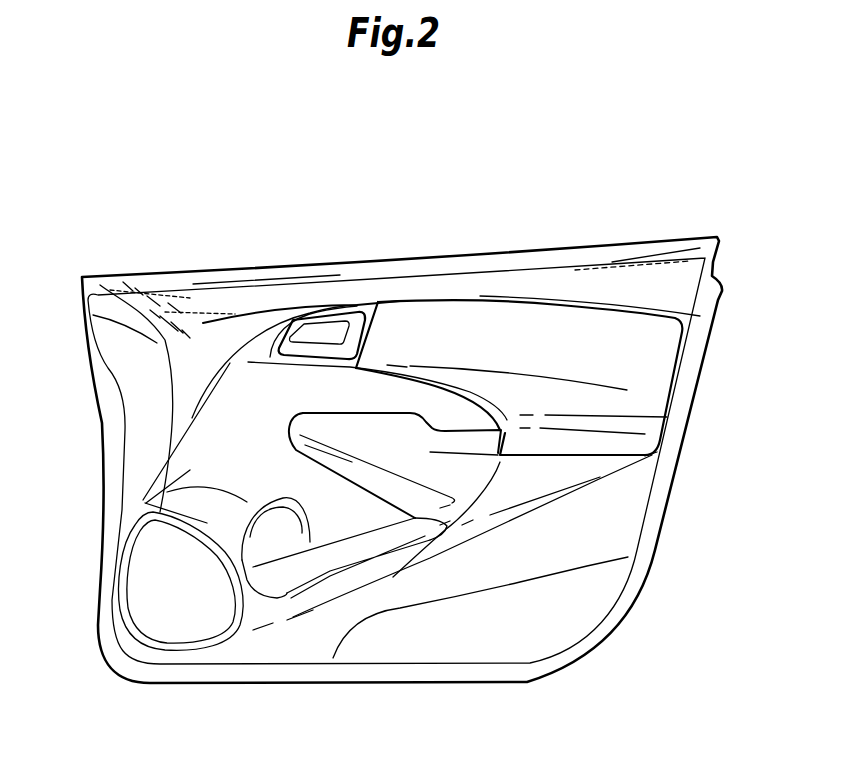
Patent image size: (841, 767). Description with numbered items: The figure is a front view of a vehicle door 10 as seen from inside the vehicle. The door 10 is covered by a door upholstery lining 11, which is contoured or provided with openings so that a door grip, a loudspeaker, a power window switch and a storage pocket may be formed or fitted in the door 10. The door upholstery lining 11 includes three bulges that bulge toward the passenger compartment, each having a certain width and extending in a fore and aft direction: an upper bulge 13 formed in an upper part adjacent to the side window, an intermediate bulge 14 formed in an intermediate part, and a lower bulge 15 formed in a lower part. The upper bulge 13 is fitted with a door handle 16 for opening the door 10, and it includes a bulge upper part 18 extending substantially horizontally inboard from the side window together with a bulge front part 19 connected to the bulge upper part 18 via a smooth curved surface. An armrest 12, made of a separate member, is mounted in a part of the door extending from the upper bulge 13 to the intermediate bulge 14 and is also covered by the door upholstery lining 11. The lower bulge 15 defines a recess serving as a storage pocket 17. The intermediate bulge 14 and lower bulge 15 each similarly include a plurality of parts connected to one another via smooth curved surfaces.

The vehicle door 10 is at (475, 174).
The door upholstery lining 11 is at (305, 300).
The armrest 12 is at (487, 325).
The upper bulge 13 is at (198, 311).
The intermediate bulge 14 is at (300, 423).
The lower bulge 15 is at (472, 573).
The door handle 16 is at (355, 320).
The storage pocket 17 is at (270, 533).
The bulge upper part 18 is at (213, 287).
The bulge front part 19 is at (270, 303).